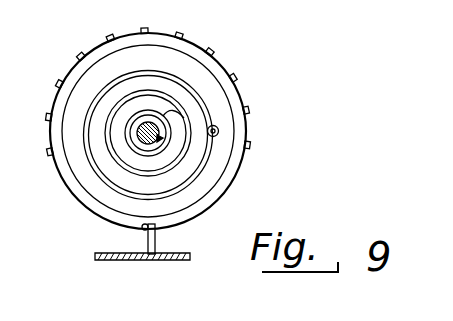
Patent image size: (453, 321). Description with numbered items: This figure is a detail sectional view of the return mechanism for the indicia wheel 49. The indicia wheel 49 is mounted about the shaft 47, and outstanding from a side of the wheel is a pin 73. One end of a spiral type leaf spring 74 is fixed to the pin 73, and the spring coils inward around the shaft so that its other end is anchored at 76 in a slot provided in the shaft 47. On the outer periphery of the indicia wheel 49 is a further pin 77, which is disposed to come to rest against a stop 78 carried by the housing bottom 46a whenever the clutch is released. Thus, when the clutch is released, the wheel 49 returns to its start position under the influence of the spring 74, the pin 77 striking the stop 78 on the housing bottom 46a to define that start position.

The indicia wheel 49 is at (194, 50).
The shaft 47 is at (140, 138).
The pin 73 is at (219, 131).
The anchor 76 is at (158, 139).
The spiral type leaf spring 74 is at (206, 187).
The pin 77 is at (142, 228).
The stop 78 is at (157, 234).
The housing bottom 46a is at (135, 261).